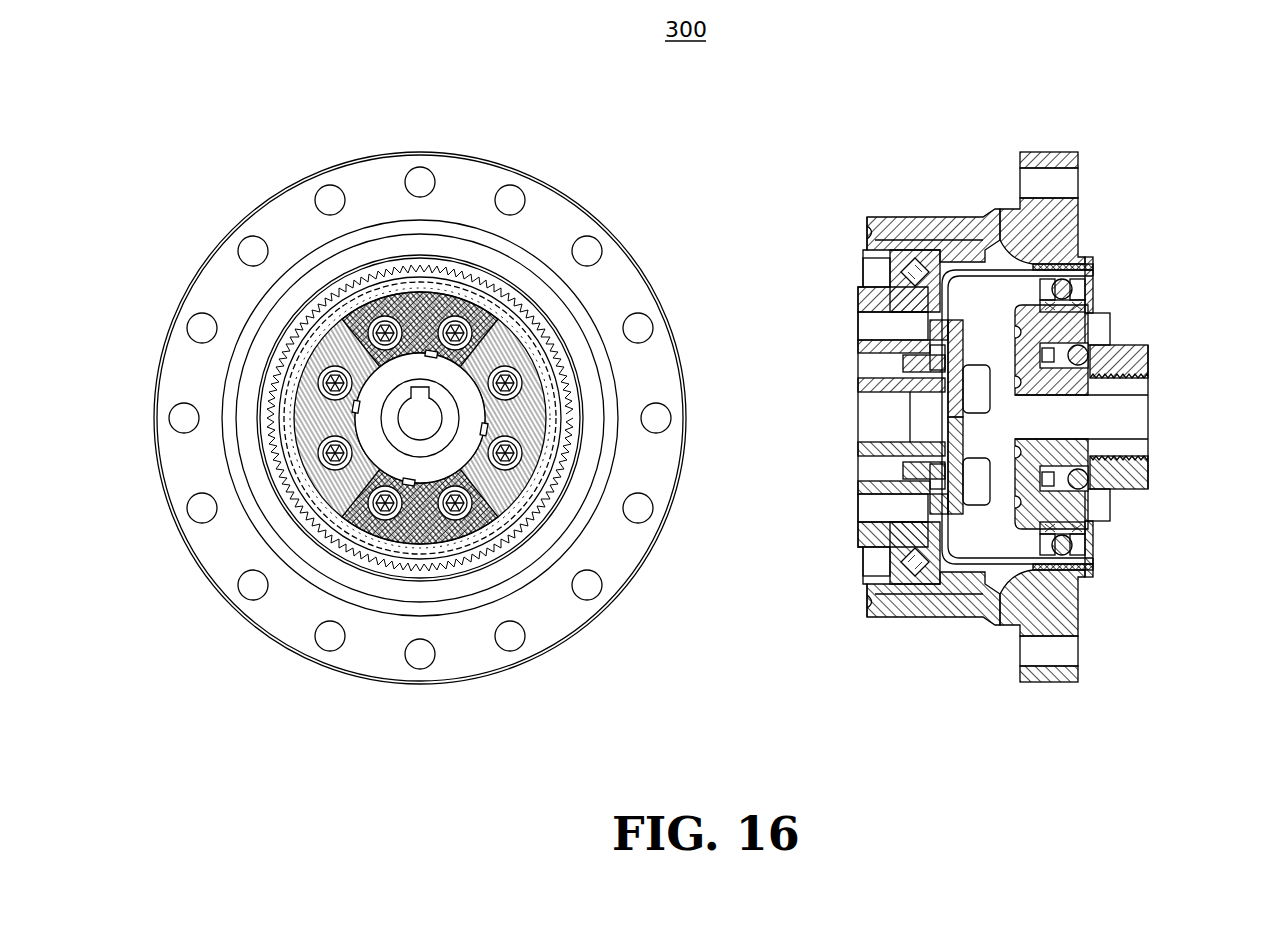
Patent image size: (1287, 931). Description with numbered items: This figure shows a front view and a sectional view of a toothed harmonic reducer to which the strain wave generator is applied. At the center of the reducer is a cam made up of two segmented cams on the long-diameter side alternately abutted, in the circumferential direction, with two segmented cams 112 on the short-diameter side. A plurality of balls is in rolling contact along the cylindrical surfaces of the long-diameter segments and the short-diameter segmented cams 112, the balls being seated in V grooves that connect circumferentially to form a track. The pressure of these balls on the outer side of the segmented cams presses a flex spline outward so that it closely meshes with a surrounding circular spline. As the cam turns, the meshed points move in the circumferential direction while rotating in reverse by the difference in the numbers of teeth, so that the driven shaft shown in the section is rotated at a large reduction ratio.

The segmented cam on short-diameter side 112 is at (525, 408).